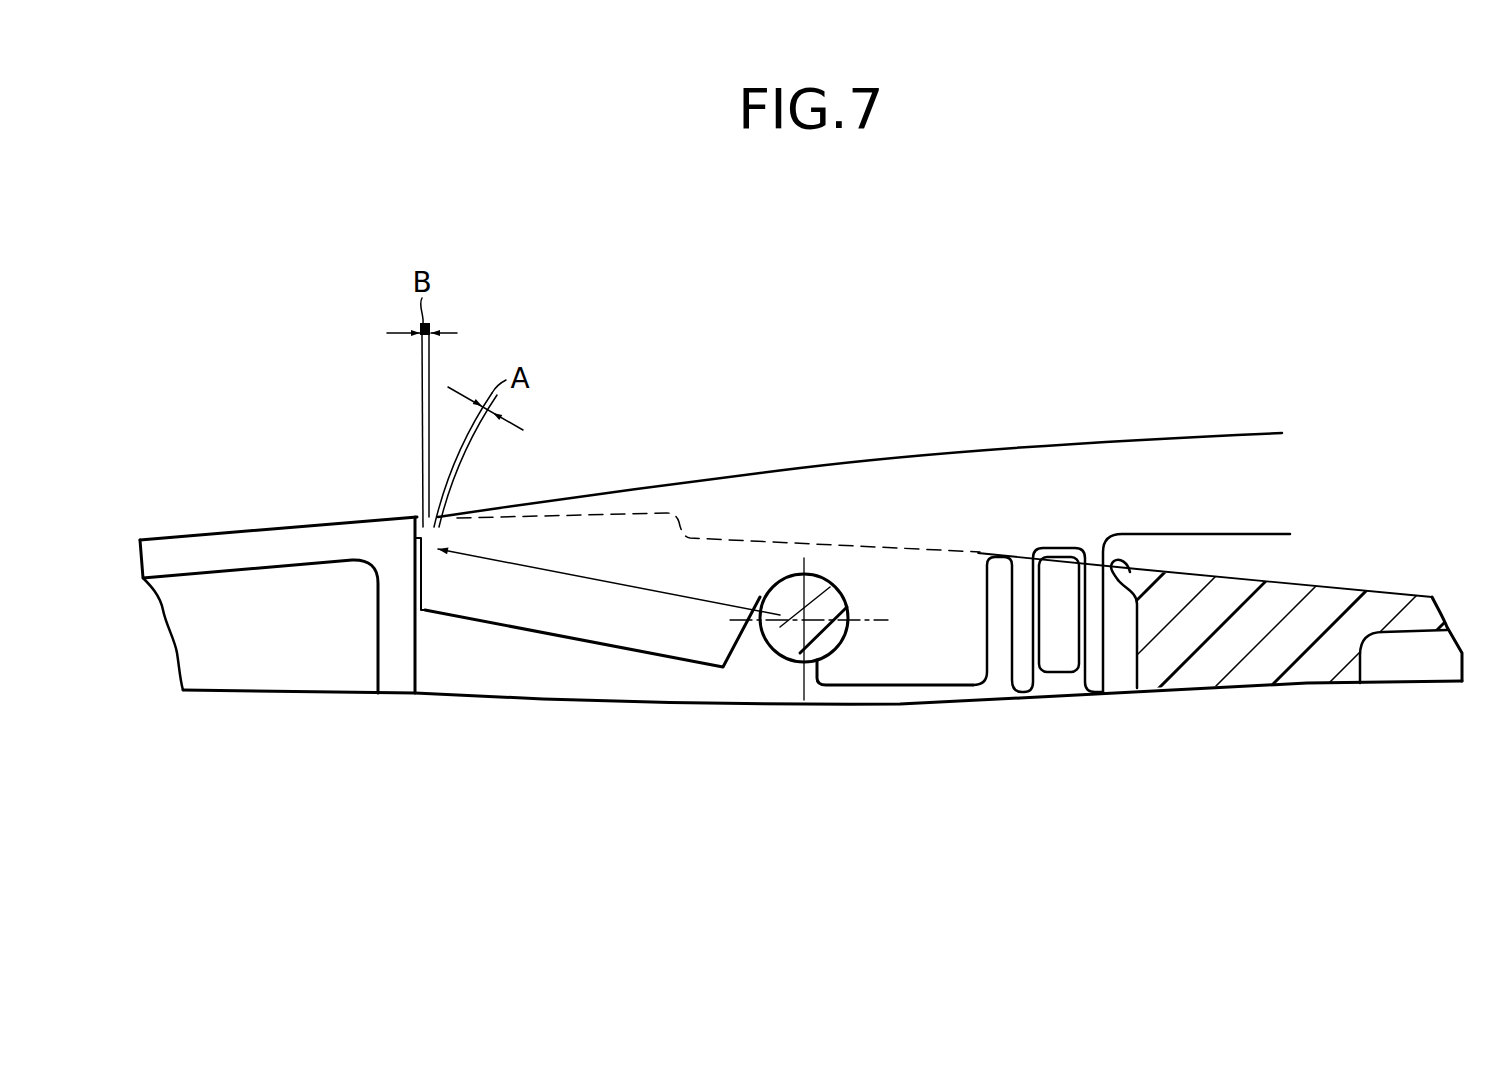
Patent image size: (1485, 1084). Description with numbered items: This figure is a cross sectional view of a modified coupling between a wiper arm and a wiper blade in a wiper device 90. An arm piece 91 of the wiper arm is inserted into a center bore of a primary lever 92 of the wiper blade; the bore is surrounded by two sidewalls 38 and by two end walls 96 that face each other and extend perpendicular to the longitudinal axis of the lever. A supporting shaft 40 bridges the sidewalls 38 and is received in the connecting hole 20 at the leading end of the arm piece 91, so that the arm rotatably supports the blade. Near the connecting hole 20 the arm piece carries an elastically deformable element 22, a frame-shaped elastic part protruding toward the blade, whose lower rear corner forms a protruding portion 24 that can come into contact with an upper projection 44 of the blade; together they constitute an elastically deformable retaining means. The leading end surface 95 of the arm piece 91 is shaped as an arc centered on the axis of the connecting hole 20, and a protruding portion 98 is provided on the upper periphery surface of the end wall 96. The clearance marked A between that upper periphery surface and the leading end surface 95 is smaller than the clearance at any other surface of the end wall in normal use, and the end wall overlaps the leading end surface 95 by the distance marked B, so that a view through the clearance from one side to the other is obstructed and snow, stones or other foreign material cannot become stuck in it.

The connecting hole 20 is at (793, 620).
The elastically deformable element 22 is at (1047, 678).
The protruding portion 24 is at (1103, 670).
The sidewalls 38 is at (531, 668).
The supporting shaft 40 is at (813, 653).
The upper projection 44 is at (1118, 576).
The wiper device 90 is at (842, 340).
The arm piece 91 is at (1172, 432).
The primary lever 92 is at (266, 535).
The leading end surface 95 is at (427, 573).
The end wall 96 is at (423, 620).
The protruding portion 98 is at (418, 517).